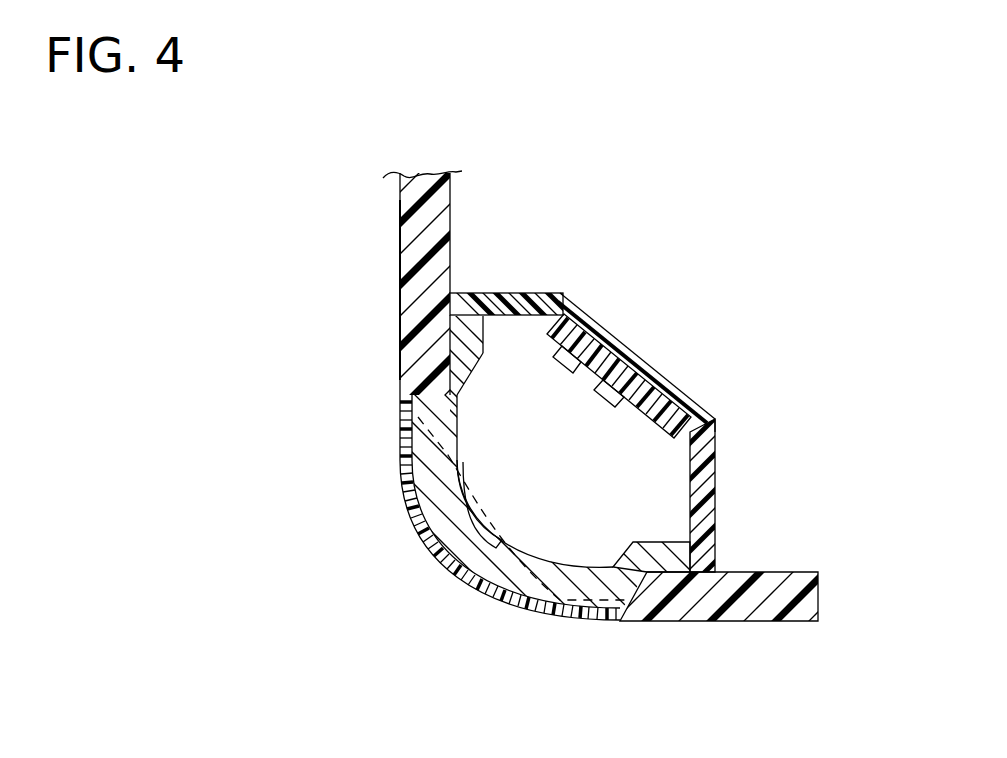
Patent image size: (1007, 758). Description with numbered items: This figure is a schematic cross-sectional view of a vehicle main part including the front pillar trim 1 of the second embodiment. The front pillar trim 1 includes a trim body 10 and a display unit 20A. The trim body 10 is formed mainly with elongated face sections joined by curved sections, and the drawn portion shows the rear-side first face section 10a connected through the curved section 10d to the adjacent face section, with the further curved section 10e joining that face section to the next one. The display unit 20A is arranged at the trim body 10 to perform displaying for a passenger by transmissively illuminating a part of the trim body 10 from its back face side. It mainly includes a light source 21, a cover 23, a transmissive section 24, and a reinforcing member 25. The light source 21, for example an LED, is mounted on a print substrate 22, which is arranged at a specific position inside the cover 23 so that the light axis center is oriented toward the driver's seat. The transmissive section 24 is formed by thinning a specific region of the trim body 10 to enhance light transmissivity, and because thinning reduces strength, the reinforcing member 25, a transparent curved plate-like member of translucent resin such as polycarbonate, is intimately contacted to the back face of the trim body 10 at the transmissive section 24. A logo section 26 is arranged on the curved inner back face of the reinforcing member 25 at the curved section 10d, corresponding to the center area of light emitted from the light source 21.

The front pillar trim 1 is at (355, 218).
The trim body 10 is at (388, 405).
The curved section 10e is at (400, 283).
The curved section 10d is at (448, 577).
The first face section 10a is at (730, 622).
The display unit 20A is at (714, 232).
The light source 21 is at (603, 405).
The print substrate 22 is at (592, 328).
The cover 23 is at (714, 425).
The transmissive section 24 is at (462, 472).
The reinforcing member 25 is at (575, 560).
The logo section 26 is at (500, 545).